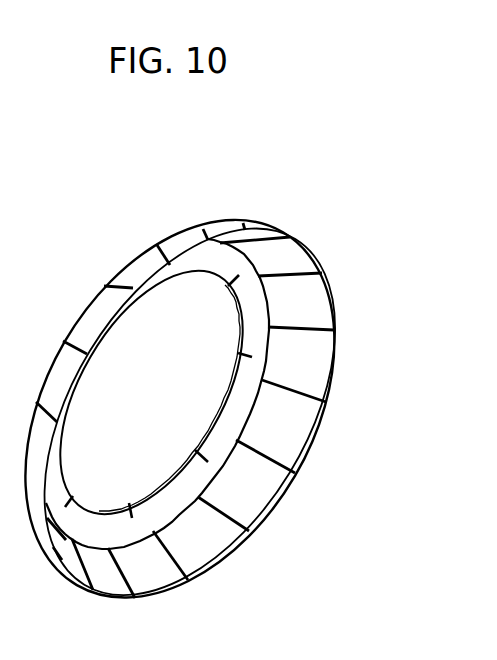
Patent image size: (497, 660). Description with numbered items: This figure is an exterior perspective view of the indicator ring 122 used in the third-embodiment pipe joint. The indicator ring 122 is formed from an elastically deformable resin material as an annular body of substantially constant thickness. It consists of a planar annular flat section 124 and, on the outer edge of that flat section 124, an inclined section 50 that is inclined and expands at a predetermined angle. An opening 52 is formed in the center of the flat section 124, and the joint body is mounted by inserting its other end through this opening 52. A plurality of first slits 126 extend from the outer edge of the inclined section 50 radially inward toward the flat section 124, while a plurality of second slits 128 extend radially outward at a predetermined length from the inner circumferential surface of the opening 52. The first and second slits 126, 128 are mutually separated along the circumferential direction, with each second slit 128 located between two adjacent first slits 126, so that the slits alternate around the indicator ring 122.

The indicator ring 122 is at (375, 291).
The inclined section 50 is at (296, 436).
The first slits 126 is at (227, 530).
The flat section 124 is at (103, 518).
The opening 52 is at (238, 325).
The second slits 128 is at (192, 458).